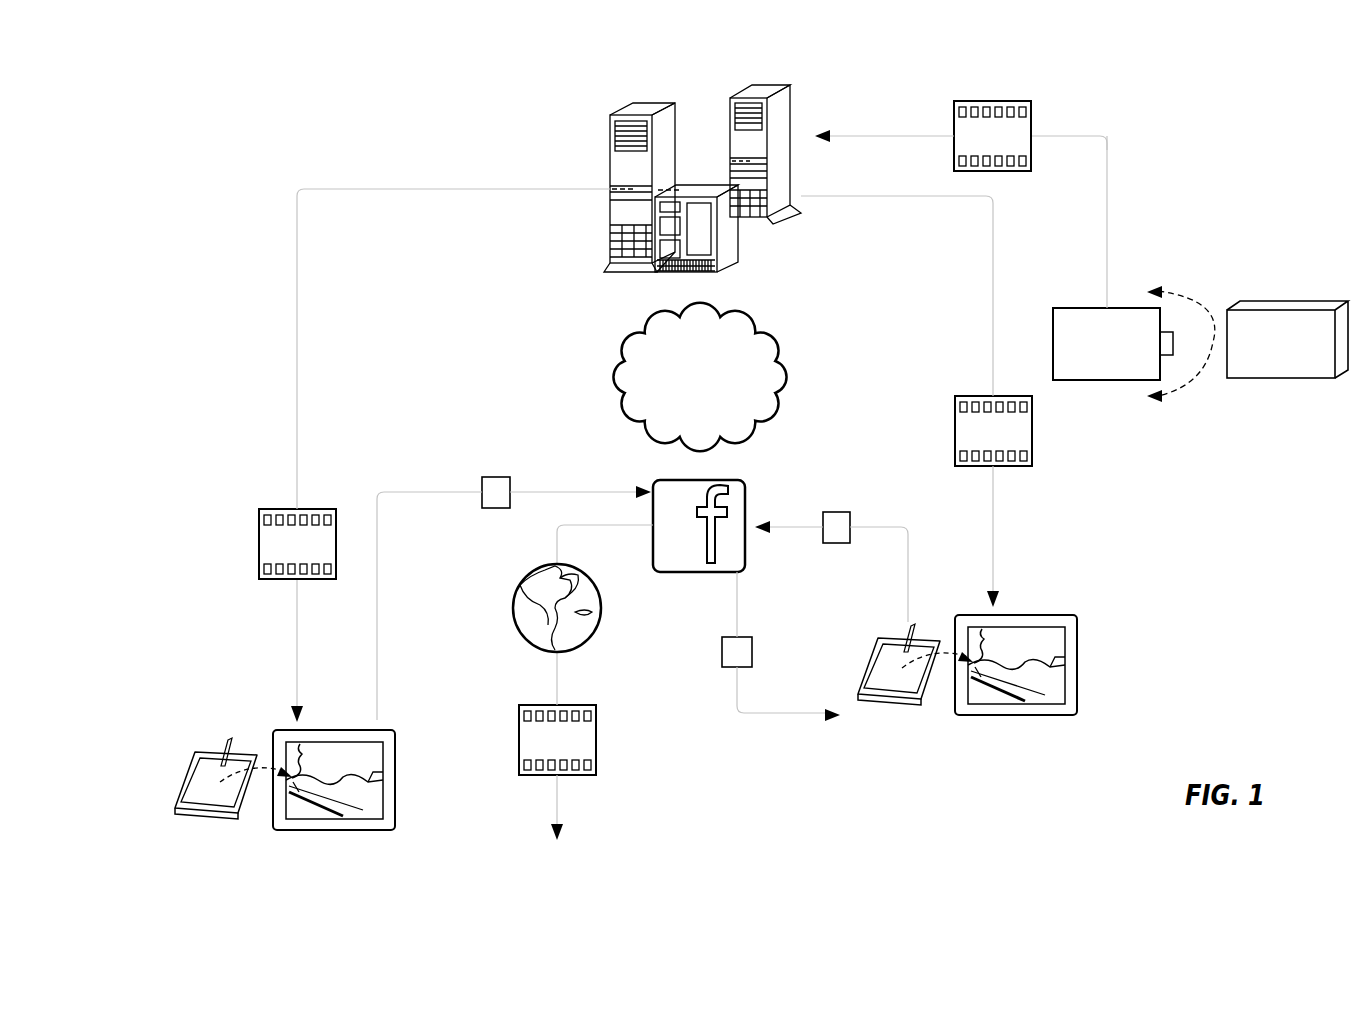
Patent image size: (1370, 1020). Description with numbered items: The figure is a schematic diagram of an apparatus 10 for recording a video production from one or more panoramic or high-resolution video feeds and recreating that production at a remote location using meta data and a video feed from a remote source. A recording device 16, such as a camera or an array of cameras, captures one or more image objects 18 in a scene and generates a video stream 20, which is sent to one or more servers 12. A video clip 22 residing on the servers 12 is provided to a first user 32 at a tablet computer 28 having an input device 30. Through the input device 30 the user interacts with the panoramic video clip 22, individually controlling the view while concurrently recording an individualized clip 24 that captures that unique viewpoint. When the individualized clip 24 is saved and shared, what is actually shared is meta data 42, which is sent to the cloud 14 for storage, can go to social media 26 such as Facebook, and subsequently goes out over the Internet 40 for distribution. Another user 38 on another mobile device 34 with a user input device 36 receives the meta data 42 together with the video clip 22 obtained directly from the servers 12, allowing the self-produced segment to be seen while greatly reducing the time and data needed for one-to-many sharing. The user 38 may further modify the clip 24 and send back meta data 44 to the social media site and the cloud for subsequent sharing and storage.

The apparatus 10 is at (272, 156).
The server 12 is at (603, 104).
The cloud 14 is at (765, 348).
The recording device 16 is at (1052, 342).
The image object 18 is at (1293, 378).
The video stream 20 is at (1012, 172).
The video clip 22 is at (280, 508).
The individualized clip 24 is at (518, 742).
The social media 26 is at (745, 505).
The tablet computer 28 is at (396, 757).
The input device 30 is at (185, 780).
The first user 32 is at (407, 827).
The mobile device 34 is at (1077, 645).
The user input device 36 is at (868, 665).
The user 38 is at (1087, 717).
The Internet 40 is at (510, 632).
The meta data 42 is at (488, 476).
The meta data 44 is at (840, 498).